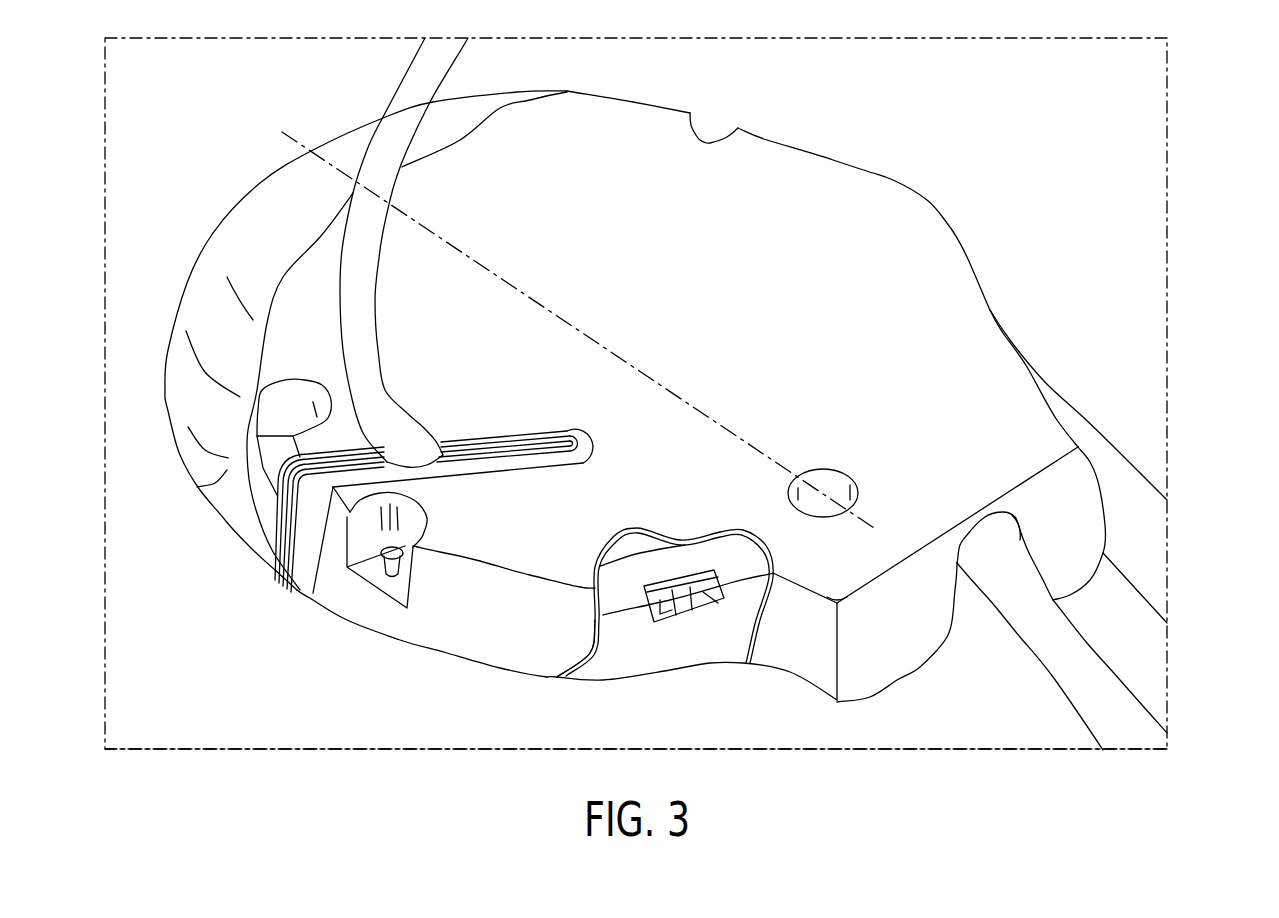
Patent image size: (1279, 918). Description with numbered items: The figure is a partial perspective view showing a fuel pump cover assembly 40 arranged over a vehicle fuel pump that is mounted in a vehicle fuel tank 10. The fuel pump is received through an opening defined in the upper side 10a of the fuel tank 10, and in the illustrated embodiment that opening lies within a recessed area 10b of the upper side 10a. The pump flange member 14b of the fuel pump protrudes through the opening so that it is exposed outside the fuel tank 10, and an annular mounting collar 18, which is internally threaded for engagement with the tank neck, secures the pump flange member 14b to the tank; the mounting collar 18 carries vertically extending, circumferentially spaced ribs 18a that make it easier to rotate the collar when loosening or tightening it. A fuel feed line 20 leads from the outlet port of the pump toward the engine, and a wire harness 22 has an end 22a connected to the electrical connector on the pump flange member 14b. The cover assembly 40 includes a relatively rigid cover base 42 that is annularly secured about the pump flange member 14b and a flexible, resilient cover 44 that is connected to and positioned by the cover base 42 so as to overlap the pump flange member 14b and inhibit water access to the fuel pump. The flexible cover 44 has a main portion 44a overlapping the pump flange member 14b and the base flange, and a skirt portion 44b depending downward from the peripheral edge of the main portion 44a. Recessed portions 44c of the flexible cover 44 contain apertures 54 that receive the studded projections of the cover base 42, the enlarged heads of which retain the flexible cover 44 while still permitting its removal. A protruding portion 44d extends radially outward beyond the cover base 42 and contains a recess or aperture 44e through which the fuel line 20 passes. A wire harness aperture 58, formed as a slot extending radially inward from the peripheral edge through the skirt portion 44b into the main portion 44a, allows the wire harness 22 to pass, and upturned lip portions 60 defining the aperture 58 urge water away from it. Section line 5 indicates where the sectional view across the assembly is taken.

The section line 5- 5 is at (282, 132).
The vehicle fuel tank 10 is at (1145, 367).
The upper side 10a is at (593, 740).
The recessed area 10b is at (203, 489).
The pump flange member 14b is at (666, 552).
The mounting collar 18 is at (717, 600).
The ribs 18a is at (697, 612).
The fuel feed line 20 is at (1125, 675).
The wire harness 22 is at (412, 70).
The end of wire harness 22a is at (392, 417).
The fuel pump cover assembly 40 is at (945, 170).
The cover base 42 is at (600, 672).
The flexible cover 44 is at (927, 243).
The main portion 44a is at (853, 190).
The flexible cover skirt portion 44b is at (490, 662).
The recessed portions 44c is at (707, 130).
The protruding portion 44d is at (1053, 437).
The recess or aperture 44e is at (960, 593).
The aperture 54 is at (392, 578).
The wire harness aperture 58 is at (505, 437).
The upturned lip portions 60 is at (456, 441).